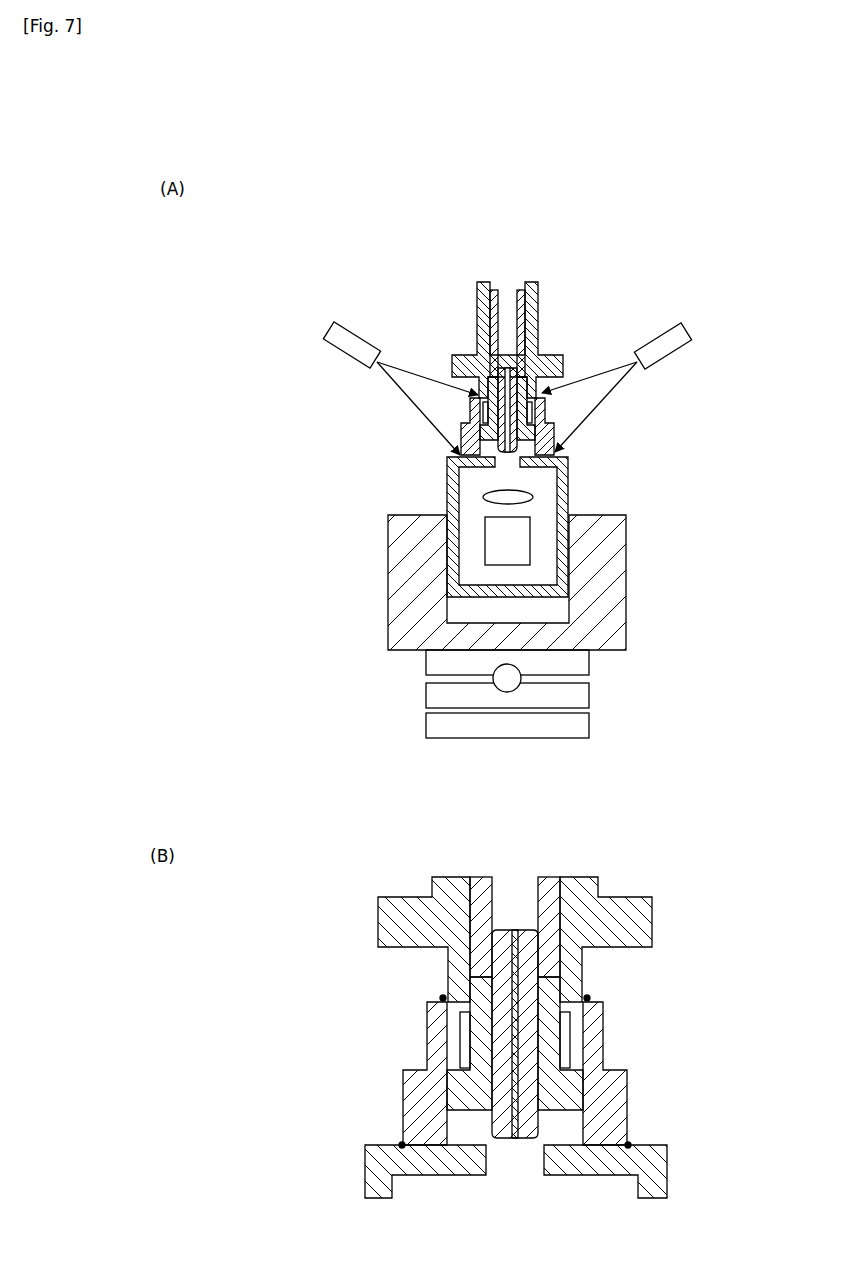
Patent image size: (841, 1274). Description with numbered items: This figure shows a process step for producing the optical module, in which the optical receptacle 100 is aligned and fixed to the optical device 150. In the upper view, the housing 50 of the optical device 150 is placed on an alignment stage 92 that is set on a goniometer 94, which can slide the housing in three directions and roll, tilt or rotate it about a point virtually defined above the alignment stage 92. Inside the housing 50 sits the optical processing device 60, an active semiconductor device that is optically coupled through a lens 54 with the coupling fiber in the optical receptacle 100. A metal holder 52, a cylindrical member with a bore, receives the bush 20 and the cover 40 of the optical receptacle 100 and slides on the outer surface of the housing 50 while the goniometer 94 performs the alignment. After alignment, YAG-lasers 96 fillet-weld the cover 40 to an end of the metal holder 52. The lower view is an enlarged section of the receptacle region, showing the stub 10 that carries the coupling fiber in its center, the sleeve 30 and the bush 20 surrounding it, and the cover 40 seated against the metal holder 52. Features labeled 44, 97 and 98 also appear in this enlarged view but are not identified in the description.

The stub 10 is at (503, 935).
The bush 20 is at (577, 1090).
The sleeve 30 is at (549, 882).
The cover 40 is at (477, 320).
The gap 44 is at (568, 1047).
The housing 50 is at (583, 470).
The metal holder 52 is at (547, 427).
The lens 54 is at (490, 497).
The optical processing device 60 is at (518, 547).
The alignment stage 92 is at (626, 540).
The goniometer 94 is at (632, 652).
The YAG-lasers 96 is at (323, 335).
The adhesive 97 is at (440, 997).
The adhesive 98 is at (400, 1143).
The optical receptacle 100 is at (583, 312).
The optical device 150 is at (427, 475).